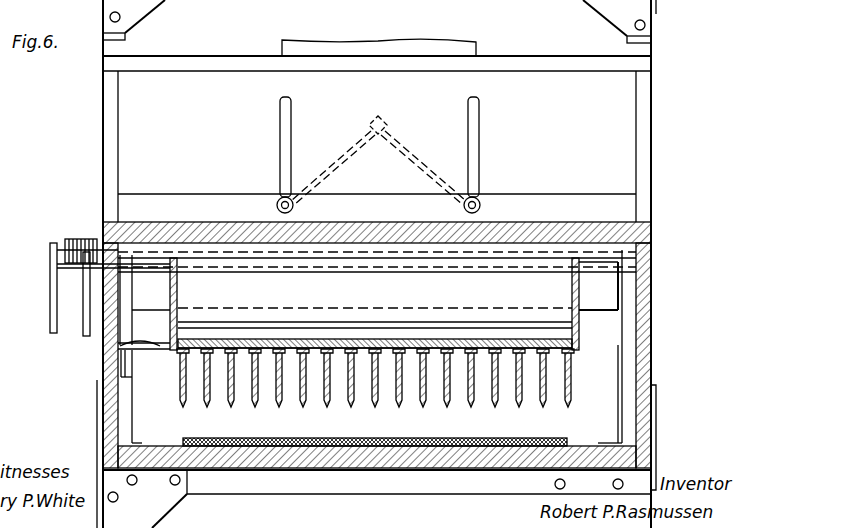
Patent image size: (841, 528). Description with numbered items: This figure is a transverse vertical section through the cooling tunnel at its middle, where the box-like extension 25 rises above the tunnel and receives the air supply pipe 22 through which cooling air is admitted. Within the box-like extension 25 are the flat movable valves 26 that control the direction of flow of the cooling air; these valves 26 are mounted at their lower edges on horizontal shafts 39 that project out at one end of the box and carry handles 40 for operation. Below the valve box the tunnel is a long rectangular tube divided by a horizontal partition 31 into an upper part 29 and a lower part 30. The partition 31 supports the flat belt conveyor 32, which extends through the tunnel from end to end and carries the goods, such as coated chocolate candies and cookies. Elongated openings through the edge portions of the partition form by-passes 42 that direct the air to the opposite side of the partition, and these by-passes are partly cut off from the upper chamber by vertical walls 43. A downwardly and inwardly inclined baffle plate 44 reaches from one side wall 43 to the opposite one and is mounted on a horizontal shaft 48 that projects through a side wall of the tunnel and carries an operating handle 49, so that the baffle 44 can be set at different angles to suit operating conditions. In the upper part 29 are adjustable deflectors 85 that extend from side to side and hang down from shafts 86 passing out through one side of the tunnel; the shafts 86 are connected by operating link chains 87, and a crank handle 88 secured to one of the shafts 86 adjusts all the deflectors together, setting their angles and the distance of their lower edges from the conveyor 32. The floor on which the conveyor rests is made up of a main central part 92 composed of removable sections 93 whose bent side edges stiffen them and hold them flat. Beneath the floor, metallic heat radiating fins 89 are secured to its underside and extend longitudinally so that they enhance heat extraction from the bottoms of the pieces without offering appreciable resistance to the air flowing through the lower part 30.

The air supply pipe 22 is at (384, 39).
The box-like extension 25 is at (103, 120).
The movable valves 26 is at (348, 150).
The upper part 29 is at (612, 284).
The lower part 30 is at (608, 398).
The horizontal partition 31 is at (416, 345).
The flat belt conveyor 32 is at (338, 342).
The horizontal shafts 39 is at (279, 200).
The handles 40 is at (280, 141).
The by-passes 42 is at (112, 340).
The vertical walls 43 is at (178, 300).
The baffle plate 44 is at (375, 294).
The horizontal shaft 48 is at (159, 269).
The operating handle 49 is at (83, 314).
The adjustable deflectors 85 is at (375, 301).
The shafts 86 is at (222, 252).
The operating link chains 87 is at (72, 239).
The crank handle 88 is at (50, 277).
The heat radiating fins 89 is at (231, 400).
The main central part 92 is at (600, 348).
The sections 93 is at (376, 342).